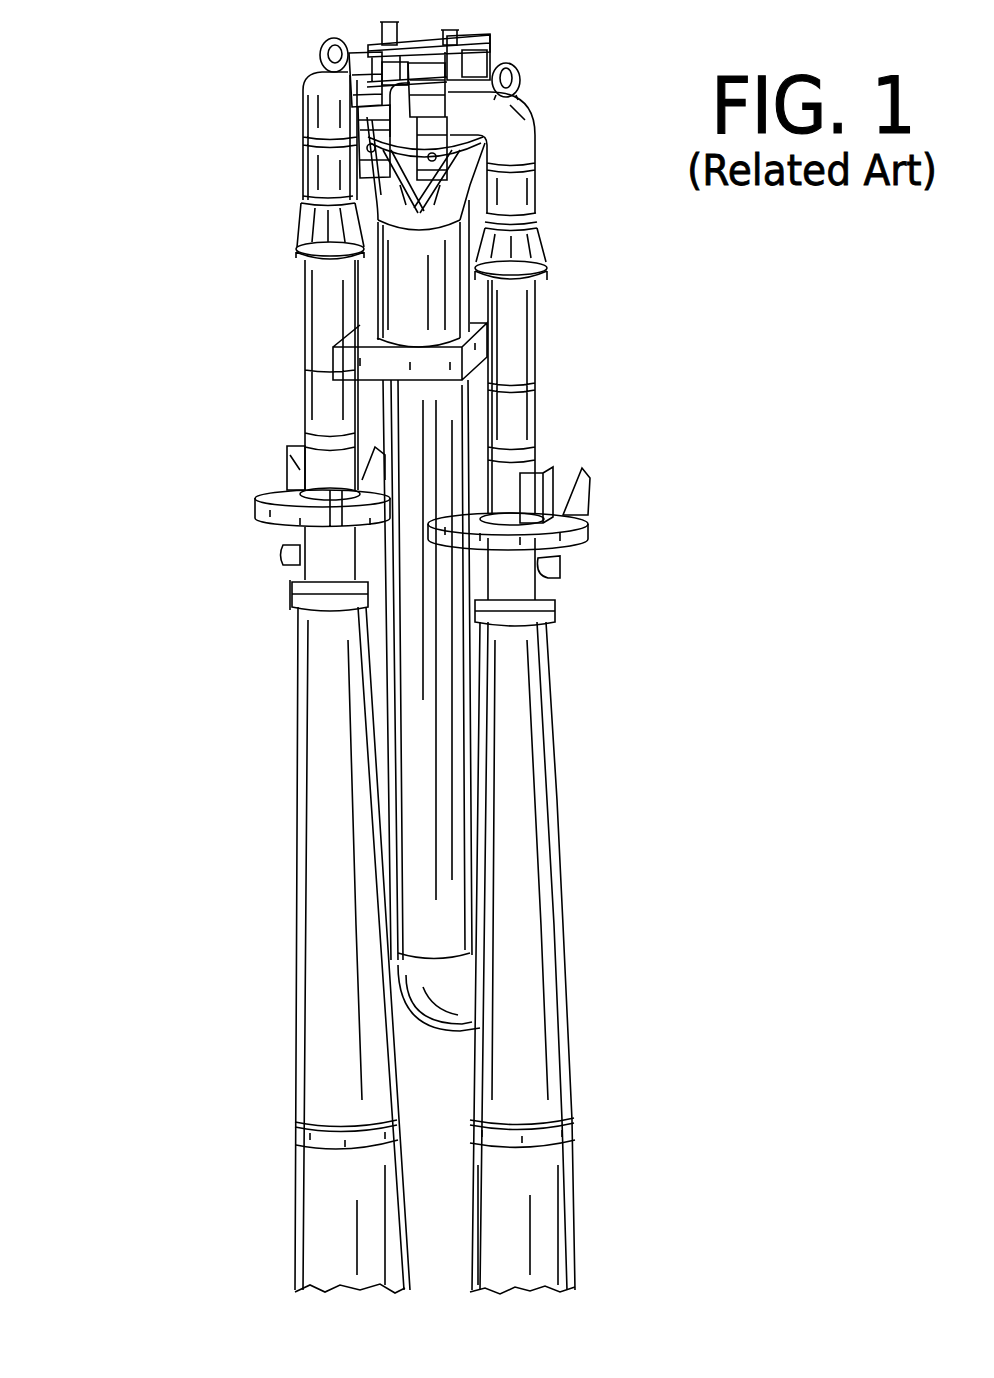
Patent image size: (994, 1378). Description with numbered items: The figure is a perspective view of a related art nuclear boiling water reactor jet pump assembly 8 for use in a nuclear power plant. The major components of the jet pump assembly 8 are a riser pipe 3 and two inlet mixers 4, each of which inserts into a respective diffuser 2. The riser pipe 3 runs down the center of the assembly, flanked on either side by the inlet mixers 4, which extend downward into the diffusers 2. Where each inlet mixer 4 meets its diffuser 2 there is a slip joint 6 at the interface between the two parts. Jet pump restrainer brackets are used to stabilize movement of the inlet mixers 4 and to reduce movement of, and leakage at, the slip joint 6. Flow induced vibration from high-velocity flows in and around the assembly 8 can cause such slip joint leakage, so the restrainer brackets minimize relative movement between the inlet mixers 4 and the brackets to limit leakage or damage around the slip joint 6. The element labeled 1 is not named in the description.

The jet pump assembly 8 is at (255, 232).
The inlet mixer 4 is at (511, 348).
The riser pipe 3 is at (418, 723).
The slip joint 6 is at (597, 451).
The clamp band 1 is at (521, 626).
The diffuser 2 is at (523, 745).